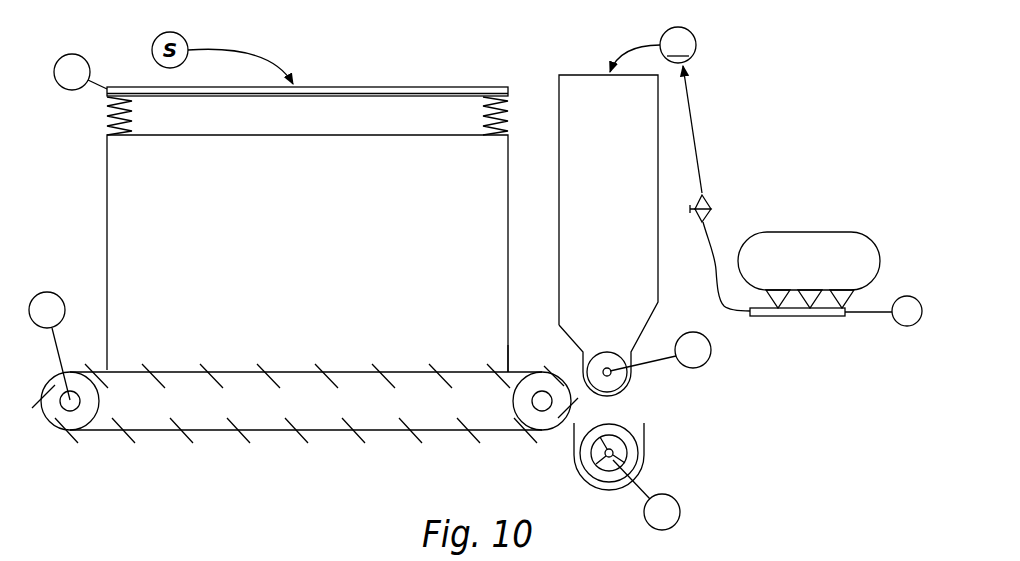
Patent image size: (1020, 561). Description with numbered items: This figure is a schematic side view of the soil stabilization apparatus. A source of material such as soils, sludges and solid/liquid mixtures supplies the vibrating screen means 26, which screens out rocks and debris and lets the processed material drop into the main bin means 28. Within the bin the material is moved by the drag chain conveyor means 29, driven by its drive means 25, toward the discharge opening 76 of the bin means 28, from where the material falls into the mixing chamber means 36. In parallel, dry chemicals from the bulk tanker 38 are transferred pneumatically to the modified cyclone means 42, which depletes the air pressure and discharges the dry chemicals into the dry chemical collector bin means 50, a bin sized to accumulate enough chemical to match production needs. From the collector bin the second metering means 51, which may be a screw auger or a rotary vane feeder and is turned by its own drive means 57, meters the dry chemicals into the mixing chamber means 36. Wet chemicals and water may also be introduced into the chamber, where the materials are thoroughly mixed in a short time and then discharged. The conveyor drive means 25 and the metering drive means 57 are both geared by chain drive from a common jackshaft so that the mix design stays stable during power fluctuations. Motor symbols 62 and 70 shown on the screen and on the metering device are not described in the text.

The drive means 25 is at (62, 296).
The vibrating screen means 26 is at (391, 84).
The main bin means 28 is at (107, 152).
The conveyor means 29 is at (346, 366).
The mixing chamber means 36 is at (707, 446).
The bulk tanker 38 is at (790, 240).
The modified cyclone means 42 is at (680, 169).
The dry chemical collector bin means 50 is at (575, 72).
The second metering means 51 is at (634, 378).
The drive means 57 is at (713, 343).
The press motor 62 is at (82, 56).
The dispenser motor 70 is at (680, 512).
The discharge opening 76 is at (509, 358).